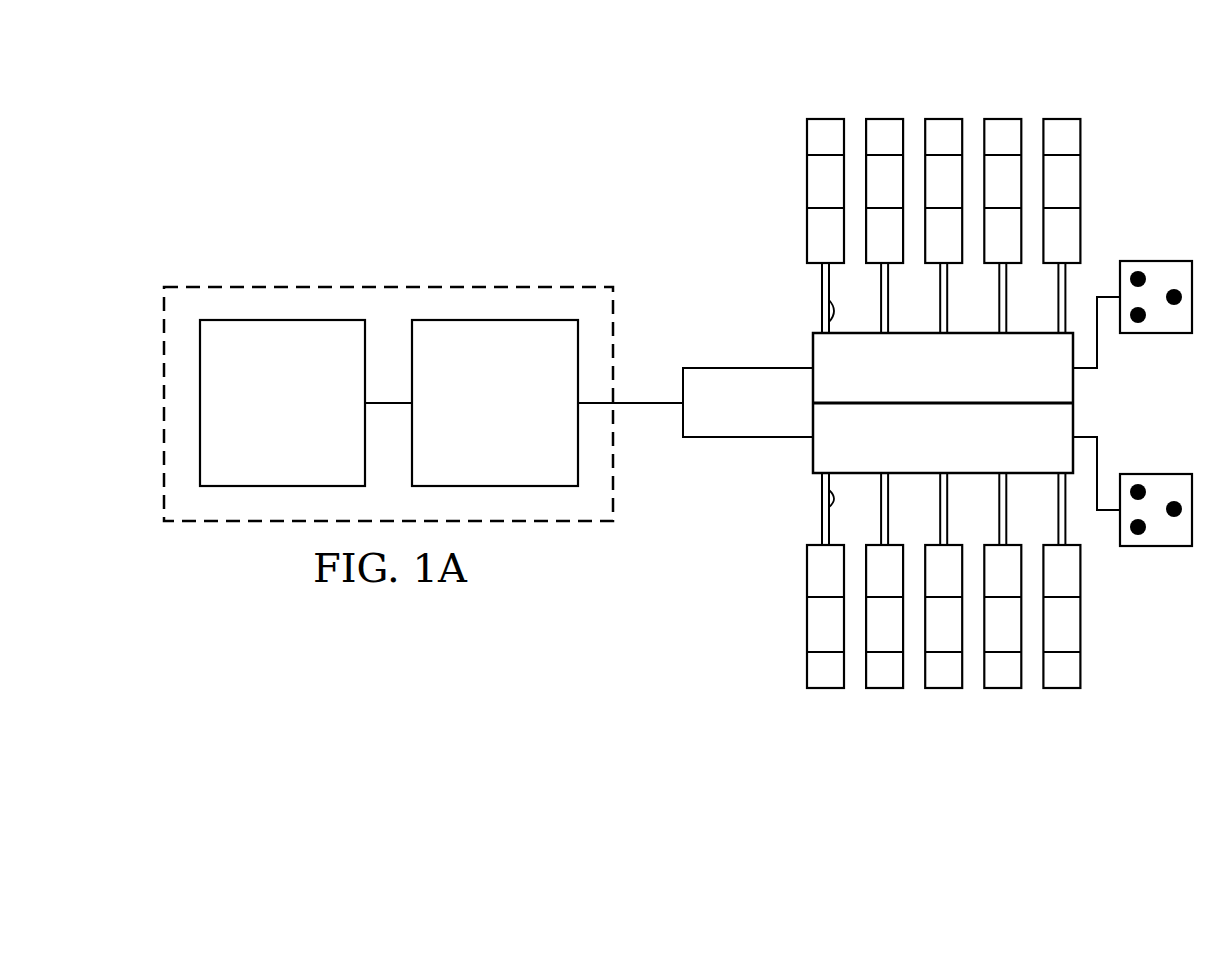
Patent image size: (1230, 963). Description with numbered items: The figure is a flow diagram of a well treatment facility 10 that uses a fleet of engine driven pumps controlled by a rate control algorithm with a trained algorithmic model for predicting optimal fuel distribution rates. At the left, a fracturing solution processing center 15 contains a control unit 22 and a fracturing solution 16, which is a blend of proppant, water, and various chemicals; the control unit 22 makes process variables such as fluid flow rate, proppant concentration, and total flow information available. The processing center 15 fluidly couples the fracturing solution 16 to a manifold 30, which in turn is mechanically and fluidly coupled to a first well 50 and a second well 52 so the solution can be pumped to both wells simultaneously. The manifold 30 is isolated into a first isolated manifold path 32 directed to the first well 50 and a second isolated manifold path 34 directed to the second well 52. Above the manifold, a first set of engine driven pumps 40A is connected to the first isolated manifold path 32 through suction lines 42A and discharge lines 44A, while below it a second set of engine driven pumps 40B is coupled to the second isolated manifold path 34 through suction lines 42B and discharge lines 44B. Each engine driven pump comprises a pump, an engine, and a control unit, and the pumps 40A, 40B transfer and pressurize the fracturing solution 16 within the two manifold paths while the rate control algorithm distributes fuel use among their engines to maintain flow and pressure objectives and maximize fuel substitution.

The well treatment facility 10 is at (1157, 95).
The fracturing solution processing center 15 is at (316, 286).
The fracturing solution 16 is at (482, 451).
The control unit 22 is at (269, 451).
The manifold 30 is at (929, 452).
The first isolated manifold path 32 is at (1080, 390).
The second isolated manifold path 34 is at (1078, 415).
The first set of engine driven pumps 40A is at (807, 182).
The second set of engine driven pumps 40B is at (807, 623).
The suction lines 42A is at (820, 286).
The suction lines 42B is at (822, 520).
The discharge lines 44A is at (818, 322).
The discharge lines 44B is at (822, 483).
The first well 50 is at (1157, 261).
The second well 52 is at (1157, 546).